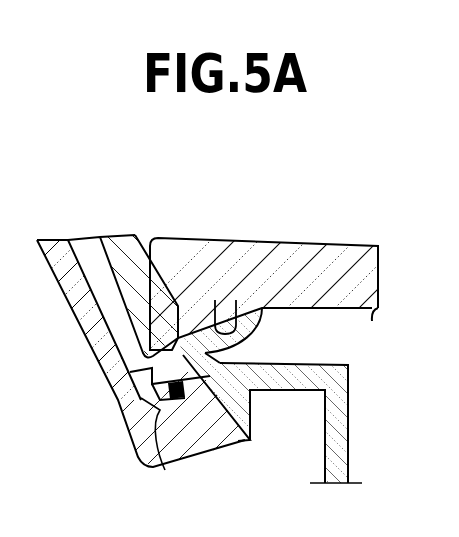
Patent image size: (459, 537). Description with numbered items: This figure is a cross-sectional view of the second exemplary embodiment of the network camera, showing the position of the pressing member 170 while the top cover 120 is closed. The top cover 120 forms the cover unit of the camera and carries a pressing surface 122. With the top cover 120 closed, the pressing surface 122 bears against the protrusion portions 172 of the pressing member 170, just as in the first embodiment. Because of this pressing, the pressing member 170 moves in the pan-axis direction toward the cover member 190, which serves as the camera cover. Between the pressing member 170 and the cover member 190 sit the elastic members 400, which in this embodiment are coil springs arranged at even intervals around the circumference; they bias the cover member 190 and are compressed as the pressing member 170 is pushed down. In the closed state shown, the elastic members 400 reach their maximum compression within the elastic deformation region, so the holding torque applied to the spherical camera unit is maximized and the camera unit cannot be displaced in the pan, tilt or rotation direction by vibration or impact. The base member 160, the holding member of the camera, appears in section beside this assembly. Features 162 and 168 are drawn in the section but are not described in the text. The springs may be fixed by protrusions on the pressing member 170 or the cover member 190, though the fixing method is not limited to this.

The top cover 120 is at (327, 253).
The pressing surface 122 is at (233, 322).
The base member 160 is at (290, 377).
The outer panel portion 162 is at (150, 330).
The engaging portion 168 is at (253, 308).
The pressing member 170 is at (223, 440).
The protrusion portions 172 is at (180, 338).
The cover member 190 is at (112, 363).
The elastic member 400 is at (172, 466).